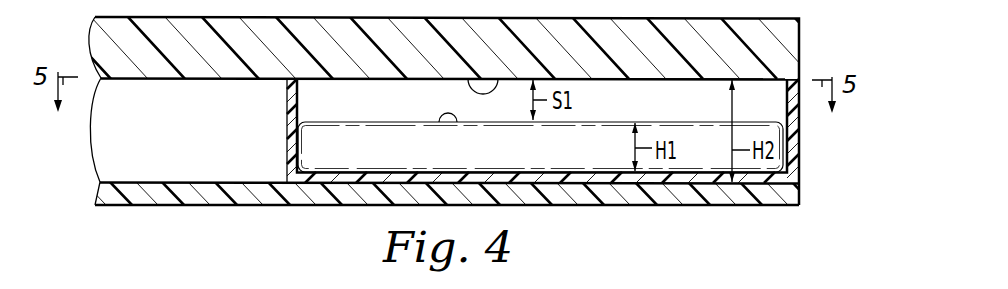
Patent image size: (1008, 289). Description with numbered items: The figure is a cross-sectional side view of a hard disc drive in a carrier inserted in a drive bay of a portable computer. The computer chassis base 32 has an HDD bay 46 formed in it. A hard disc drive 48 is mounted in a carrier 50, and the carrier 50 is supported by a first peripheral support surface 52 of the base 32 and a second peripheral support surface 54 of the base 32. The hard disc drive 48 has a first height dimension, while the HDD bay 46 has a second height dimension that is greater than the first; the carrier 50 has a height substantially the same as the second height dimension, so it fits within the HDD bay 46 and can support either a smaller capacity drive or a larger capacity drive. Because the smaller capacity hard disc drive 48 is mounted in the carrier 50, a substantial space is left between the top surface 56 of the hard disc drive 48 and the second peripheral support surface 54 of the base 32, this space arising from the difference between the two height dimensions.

The computer chassis base 32 is at (800, 34).
The HDD bay 46 is at (818, 159).
The hard disc drive 48 is at (316, 155).
The carrier 50 is at (286, 124).
The first peripheral support surface 52 is at (196, 205).
The second peripheral support surface 54 is at (470, 77).
The top surface 56 is at (439, 124).